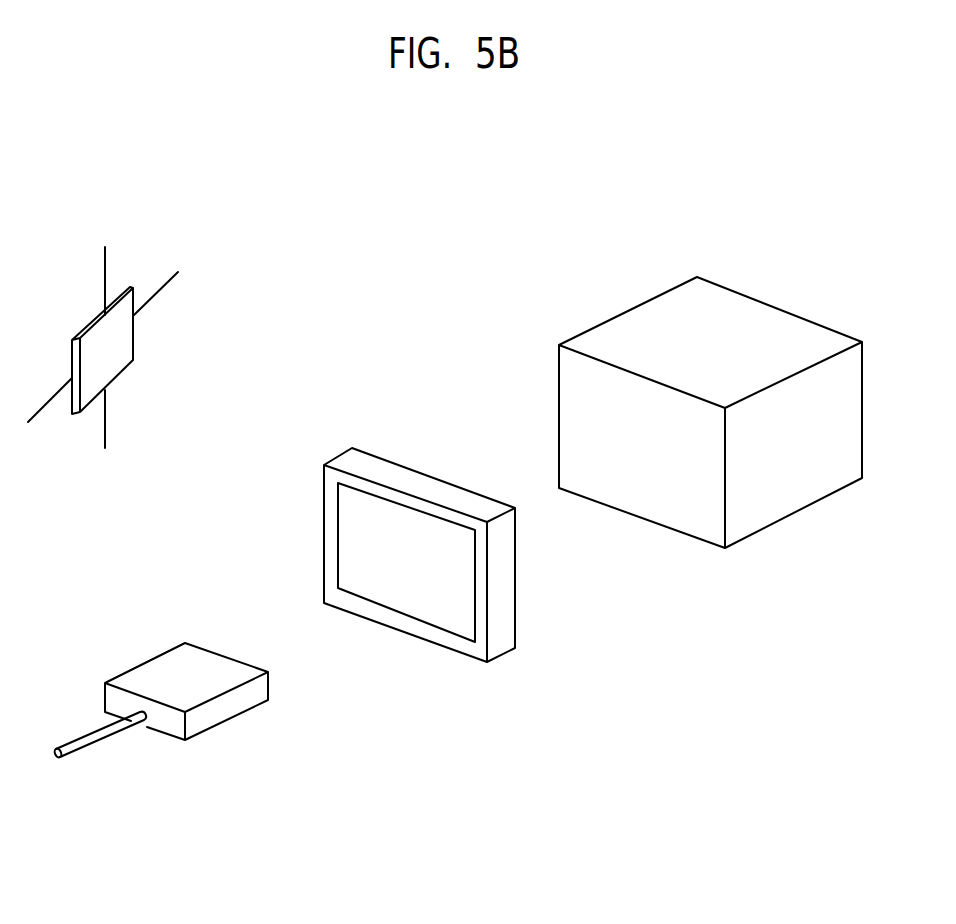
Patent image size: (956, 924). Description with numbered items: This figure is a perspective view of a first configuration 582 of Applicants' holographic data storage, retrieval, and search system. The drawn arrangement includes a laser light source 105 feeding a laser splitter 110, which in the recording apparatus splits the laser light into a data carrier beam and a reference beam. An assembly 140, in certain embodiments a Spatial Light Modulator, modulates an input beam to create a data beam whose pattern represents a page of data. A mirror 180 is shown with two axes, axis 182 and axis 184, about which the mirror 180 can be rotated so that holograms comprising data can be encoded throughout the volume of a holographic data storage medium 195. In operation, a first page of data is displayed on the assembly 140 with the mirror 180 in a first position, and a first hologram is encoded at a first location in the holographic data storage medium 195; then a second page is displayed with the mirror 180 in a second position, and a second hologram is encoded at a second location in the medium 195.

The laser light source 105 is at (90, 740).
The laser splitter 110 is at (220, 710).
The assembly (spatial light modulator) 140 is at (503, 640).
The mirror 180 is at (121, 357).
The axis 182 is at (155, 296).
The axis 184 is at (105, 253).
The holographic data storage medium 195 is at (798, 498).
The configuration 582 is at (432, 742).